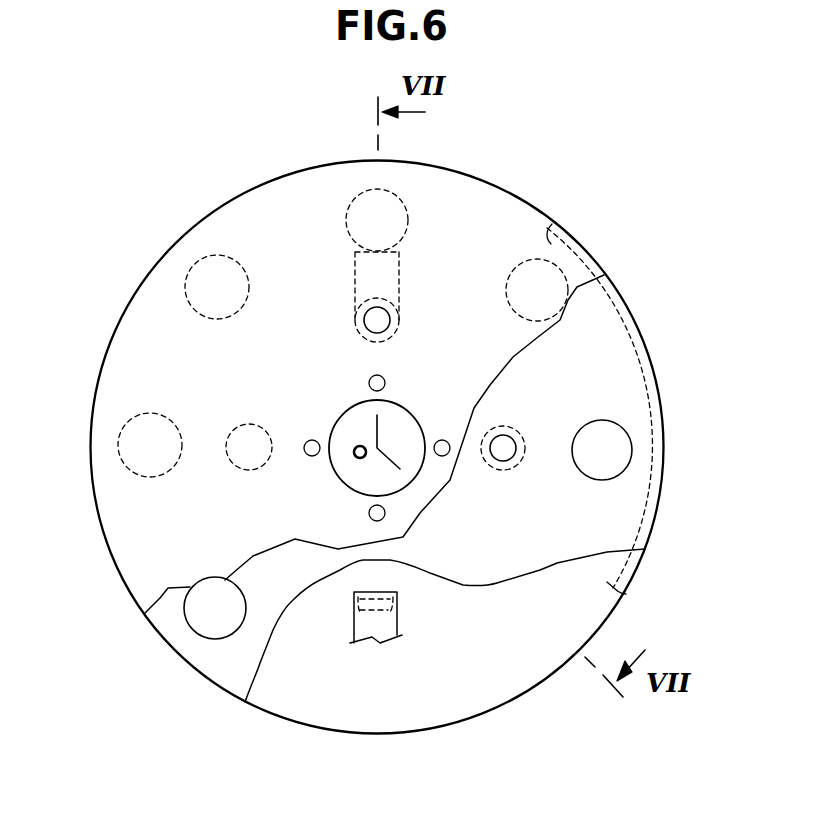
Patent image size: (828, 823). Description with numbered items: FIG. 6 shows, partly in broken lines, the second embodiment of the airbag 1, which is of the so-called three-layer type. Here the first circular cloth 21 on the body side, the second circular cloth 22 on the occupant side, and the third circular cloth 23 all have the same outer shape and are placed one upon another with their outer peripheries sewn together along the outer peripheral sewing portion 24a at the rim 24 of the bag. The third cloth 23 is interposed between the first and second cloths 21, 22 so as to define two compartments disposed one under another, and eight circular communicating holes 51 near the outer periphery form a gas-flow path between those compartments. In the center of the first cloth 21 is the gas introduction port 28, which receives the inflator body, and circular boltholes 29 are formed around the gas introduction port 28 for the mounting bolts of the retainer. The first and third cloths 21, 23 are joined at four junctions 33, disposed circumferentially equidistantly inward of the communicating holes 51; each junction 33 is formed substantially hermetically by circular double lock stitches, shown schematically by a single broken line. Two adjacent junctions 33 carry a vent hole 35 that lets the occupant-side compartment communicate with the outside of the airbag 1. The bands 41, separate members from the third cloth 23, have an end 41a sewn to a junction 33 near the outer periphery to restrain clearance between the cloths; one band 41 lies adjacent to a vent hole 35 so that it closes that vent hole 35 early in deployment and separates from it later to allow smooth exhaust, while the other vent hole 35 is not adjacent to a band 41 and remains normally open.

The airbag 1 is at (584, 163).
The first circular cloth 21 is at (138, 567).
The second circular cloth 22 is at (292, 703).
The third circular cloth 23 is at (232, 672).
The outer peripheral portion 24 is at (627, 312).
The outer peripheral sewing portion 24a is at (642, 345).
The gas introduction port 28 is at (410, 412).
The boltholes 29 is at (368, 383).
The junctions 33 is at (400, 325).
The vent hole 35 is at (388, 331).
The band 41 is at (400, 265).
The end of the band 41a is at (353, 295).
The communicating holes 51 is at (193, 263).